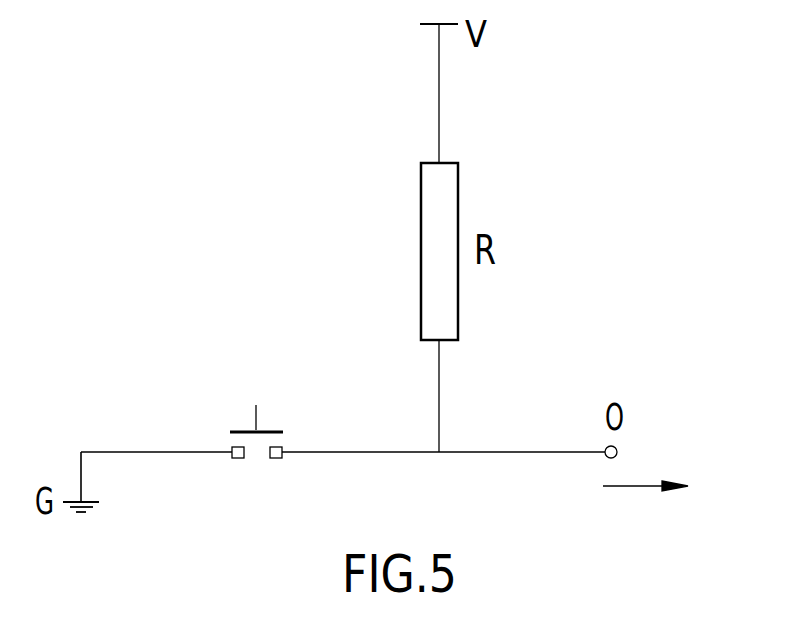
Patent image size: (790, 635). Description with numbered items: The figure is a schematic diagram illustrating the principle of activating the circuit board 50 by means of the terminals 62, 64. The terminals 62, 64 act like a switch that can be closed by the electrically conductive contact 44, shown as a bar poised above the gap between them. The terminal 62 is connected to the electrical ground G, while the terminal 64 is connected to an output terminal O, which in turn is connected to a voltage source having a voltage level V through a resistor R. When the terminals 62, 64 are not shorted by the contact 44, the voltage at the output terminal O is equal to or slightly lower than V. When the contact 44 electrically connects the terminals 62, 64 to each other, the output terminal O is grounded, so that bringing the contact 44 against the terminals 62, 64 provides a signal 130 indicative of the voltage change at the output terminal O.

The circuit board 50 is at (349, 258).
The electrically conductive contact 44 is at (242, 430).
The terminal 62 is at (239, 458).
The terminal 64 is at (277, 458).
The signal 130 is at (630, 488).